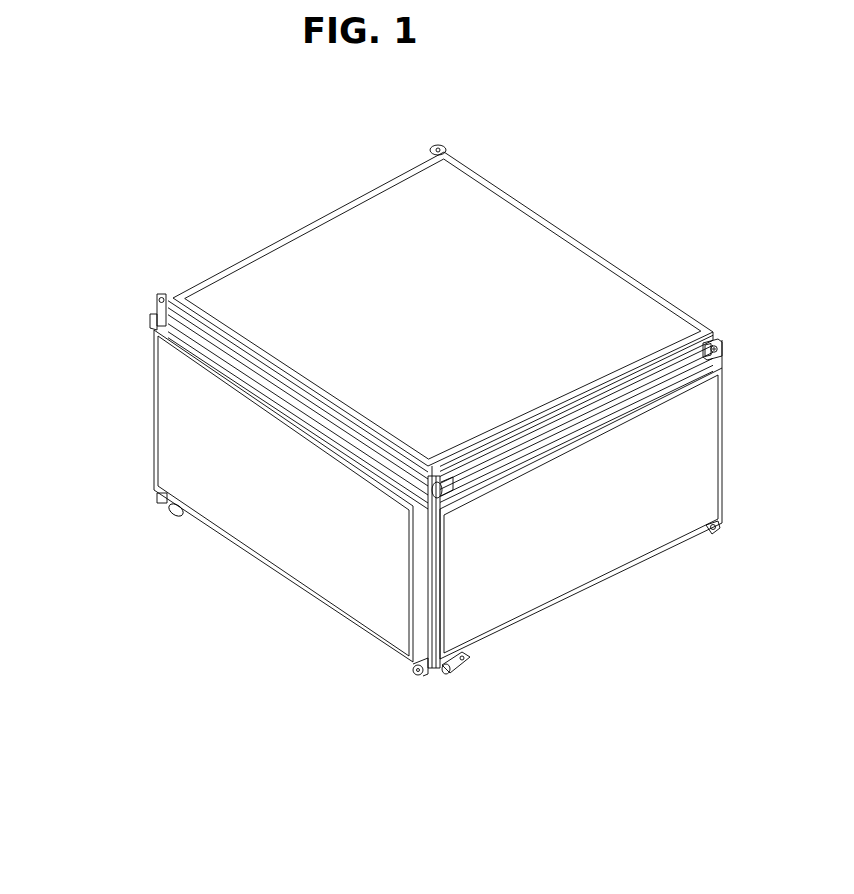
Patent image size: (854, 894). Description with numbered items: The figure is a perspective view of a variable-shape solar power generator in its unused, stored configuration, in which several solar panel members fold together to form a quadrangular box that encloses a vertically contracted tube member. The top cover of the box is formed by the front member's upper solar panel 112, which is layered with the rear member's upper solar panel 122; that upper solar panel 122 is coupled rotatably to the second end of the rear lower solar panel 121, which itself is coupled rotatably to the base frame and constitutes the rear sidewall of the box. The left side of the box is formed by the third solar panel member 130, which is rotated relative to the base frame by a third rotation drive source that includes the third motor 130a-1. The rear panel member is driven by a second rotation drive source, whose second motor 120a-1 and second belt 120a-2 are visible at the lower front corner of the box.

The 1-2 solar panel for forming a box 112 is at (322, 275).
The 2-1 solar panel for forming a box 121 is at (570, 533).
The 2-2 solar panel for forming a box 122 is at (602, 398).
The third solar panel member for forming a box 130 is at (297, 535).
The third motor 130a-1 is at (167, 507).
The second motor 120a-1 is at (457, 665).
The second belt 120a-2 is at (432, 590).